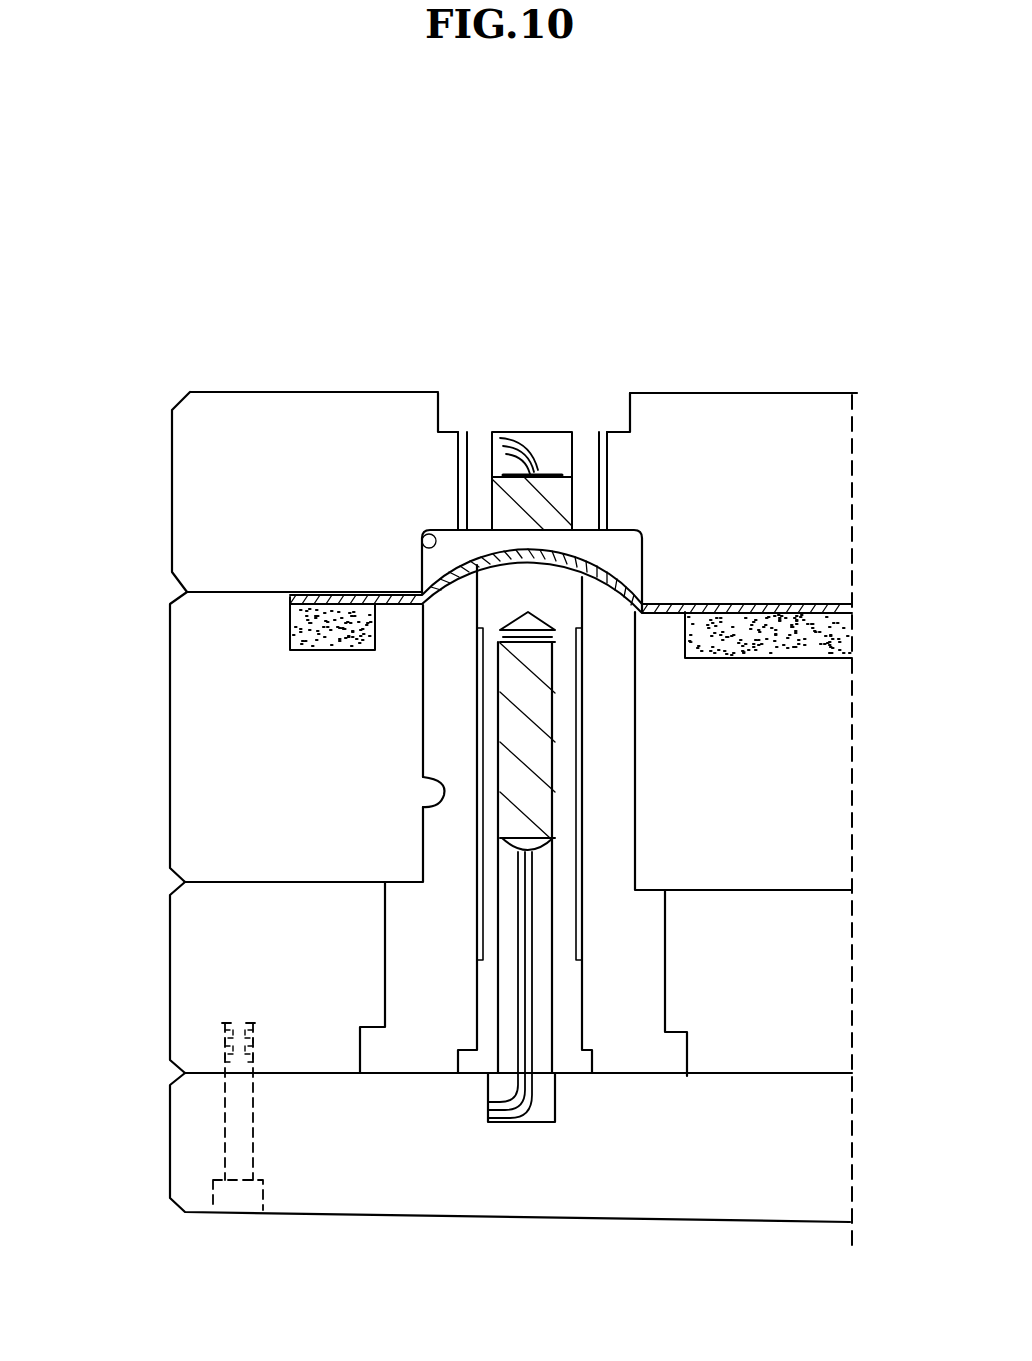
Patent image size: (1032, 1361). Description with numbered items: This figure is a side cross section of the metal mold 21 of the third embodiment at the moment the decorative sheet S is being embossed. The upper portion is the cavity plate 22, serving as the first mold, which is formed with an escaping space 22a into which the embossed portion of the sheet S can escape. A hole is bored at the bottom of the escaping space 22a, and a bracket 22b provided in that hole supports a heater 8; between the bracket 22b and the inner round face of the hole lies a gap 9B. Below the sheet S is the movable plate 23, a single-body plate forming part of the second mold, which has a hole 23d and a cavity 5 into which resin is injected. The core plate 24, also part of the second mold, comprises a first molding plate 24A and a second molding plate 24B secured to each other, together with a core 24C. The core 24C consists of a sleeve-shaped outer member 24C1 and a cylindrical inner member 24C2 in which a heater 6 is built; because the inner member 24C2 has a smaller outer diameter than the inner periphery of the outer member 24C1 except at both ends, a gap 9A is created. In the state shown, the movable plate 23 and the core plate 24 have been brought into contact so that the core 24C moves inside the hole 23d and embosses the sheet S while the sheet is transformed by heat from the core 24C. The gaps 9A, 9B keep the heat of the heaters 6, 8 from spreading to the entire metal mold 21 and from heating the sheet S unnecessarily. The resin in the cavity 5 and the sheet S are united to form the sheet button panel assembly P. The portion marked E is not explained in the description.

The metal mold 21 is at (205, 386).
The cavity plate 22 is at (280, 392).
The escaping space 22a is at (430, 530).
The bracket 22b is at (495, 393).
The movable plate 23 is at (170, 705).
The hole 23d is at (440, 792).
The core plate 24 is at (170, 1000).
The first molding plate 24A is at (170, 945).
The second molding plate 24B is at (170, 1137).
The core 24C is at (636, 838).
The outer member 24C1 is at (648, 1078).
The inner member 24C2 is at (468, 1078).
The cavity 5 is at (328, 625).
The heater 6 is at (556, 765).
The heater 8 is at (573, 492).
The gap 9A is at (583, 685).
The gap 9B is at (607, 505).
The electrode E is at (598, 568).
The decorative sheet S is at (760, 600).
The sheet button panel assembly P is at (845, 640).